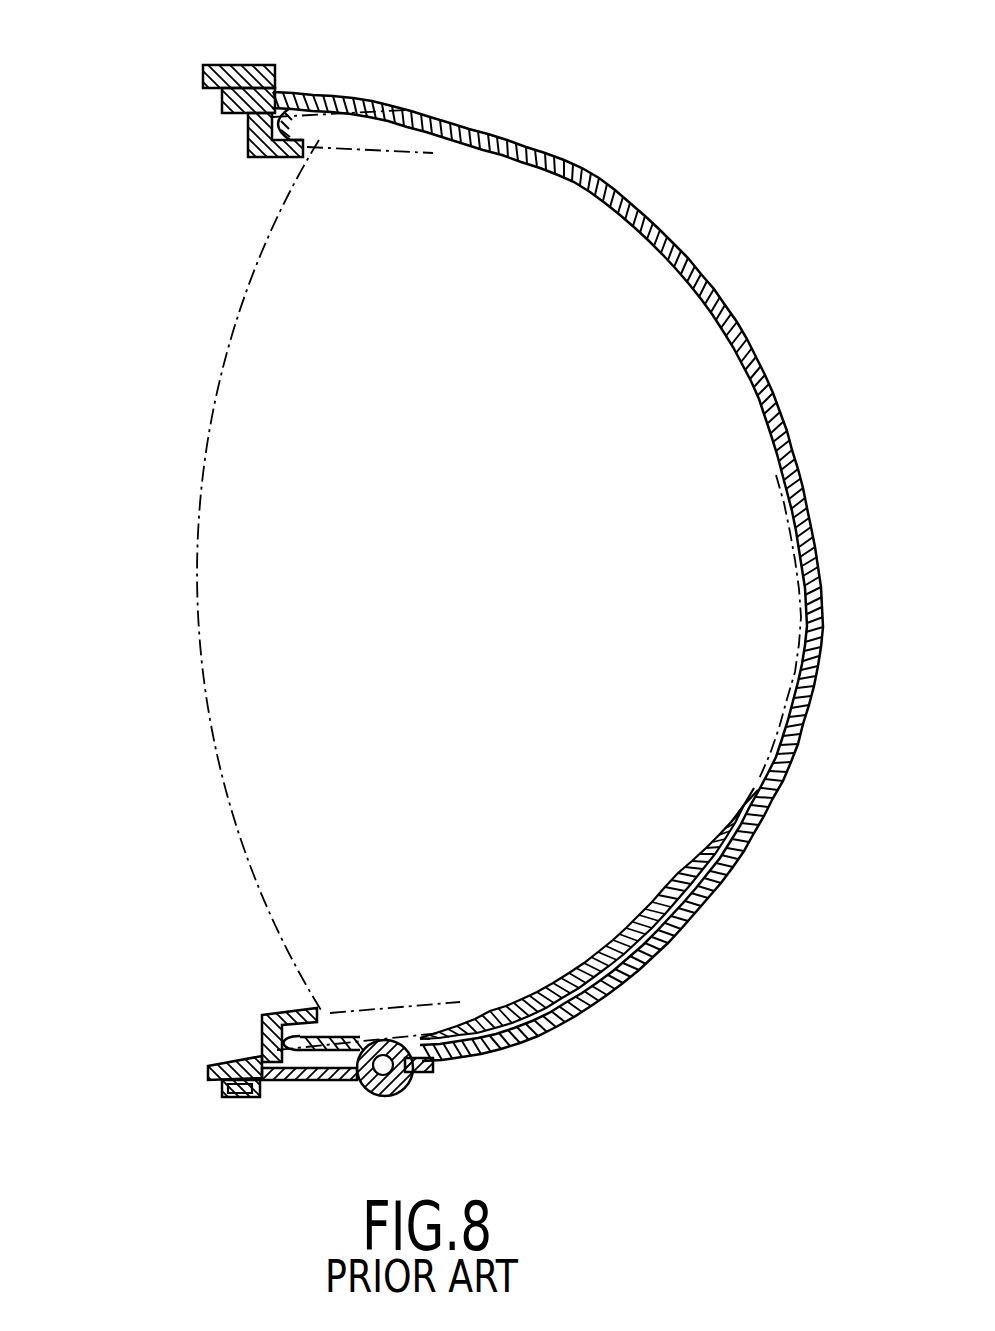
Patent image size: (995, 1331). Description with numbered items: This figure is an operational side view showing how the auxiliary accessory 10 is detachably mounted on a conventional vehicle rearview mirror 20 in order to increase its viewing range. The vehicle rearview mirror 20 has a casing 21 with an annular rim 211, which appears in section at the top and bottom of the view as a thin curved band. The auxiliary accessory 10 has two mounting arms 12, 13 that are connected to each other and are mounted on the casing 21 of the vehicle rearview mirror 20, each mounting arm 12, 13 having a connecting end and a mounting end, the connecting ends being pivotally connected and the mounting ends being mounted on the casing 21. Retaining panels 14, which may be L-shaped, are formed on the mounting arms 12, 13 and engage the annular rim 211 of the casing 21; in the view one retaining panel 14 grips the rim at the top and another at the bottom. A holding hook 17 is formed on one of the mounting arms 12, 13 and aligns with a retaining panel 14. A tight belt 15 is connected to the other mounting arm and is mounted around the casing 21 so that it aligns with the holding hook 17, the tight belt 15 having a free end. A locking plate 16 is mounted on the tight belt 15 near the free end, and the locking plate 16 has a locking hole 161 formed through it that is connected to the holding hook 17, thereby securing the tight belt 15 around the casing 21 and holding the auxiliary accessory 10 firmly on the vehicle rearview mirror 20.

The auxiliary accessory 10 is at (172, 57).
The mounting arm 12 is at (228, 68).
The mounting arm 13 is at (228, 1065).
The retaining panel 14 is at (255, 158).
The tight belt 15 is at (615, 982).
The locking plate 16 is at (300, 1080).
The holding hook 17 is at (235, 1100).
The locking hole 161 is at (228, 1088).
The vehicle rearview mirror 20 is at (203, 685).
The casing 21 is at (405, 112).
The annular rim 211 is at (293, 120).